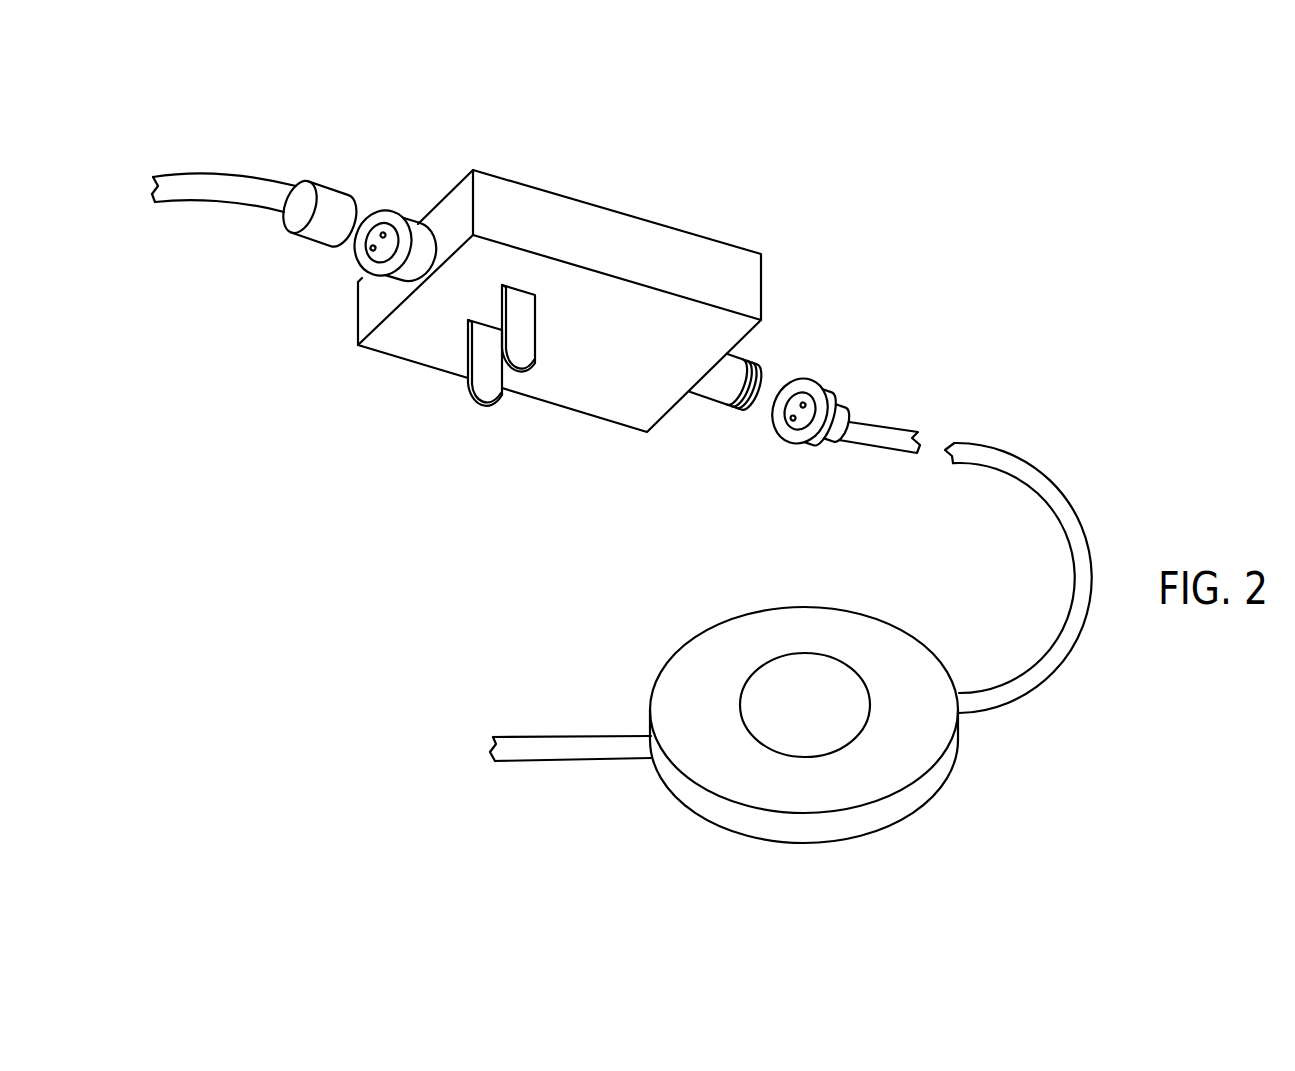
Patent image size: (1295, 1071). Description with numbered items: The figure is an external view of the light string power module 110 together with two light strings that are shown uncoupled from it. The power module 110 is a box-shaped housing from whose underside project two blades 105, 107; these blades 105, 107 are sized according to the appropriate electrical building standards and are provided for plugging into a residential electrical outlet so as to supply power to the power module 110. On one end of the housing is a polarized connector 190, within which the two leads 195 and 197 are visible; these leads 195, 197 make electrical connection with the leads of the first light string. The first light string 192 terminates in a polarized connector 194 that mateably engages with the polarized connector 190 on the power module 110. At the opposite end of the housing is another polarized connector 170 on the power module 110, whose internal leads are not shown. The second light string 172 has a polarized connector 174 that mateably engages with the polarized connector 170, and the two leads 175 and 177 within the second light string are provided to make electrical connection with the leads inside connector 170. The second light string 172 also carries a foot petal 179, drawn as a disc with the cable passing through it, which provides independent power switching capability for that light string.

The power module 110 is at (773, 193).
The blade 105 is at (466, 364).
The blade 107 is at (523, 358).
The polarized connector 190 is at (378, 213).
The lead 195 is at (385, 237).
The lead 197 is at (373, 250).
The first light string 192 is at (340, 124).
The polarized connector 194 is at (332, 187).
The polarized connector 170 is at (742, 355).
The polarized connector 174 is at (808, 382).
The lead 175 is at (804, 406).
The lead 177 is at (793, 420).
The second light string 172 is at (1003, 420).
The foot petal 179 is at (958, 733).